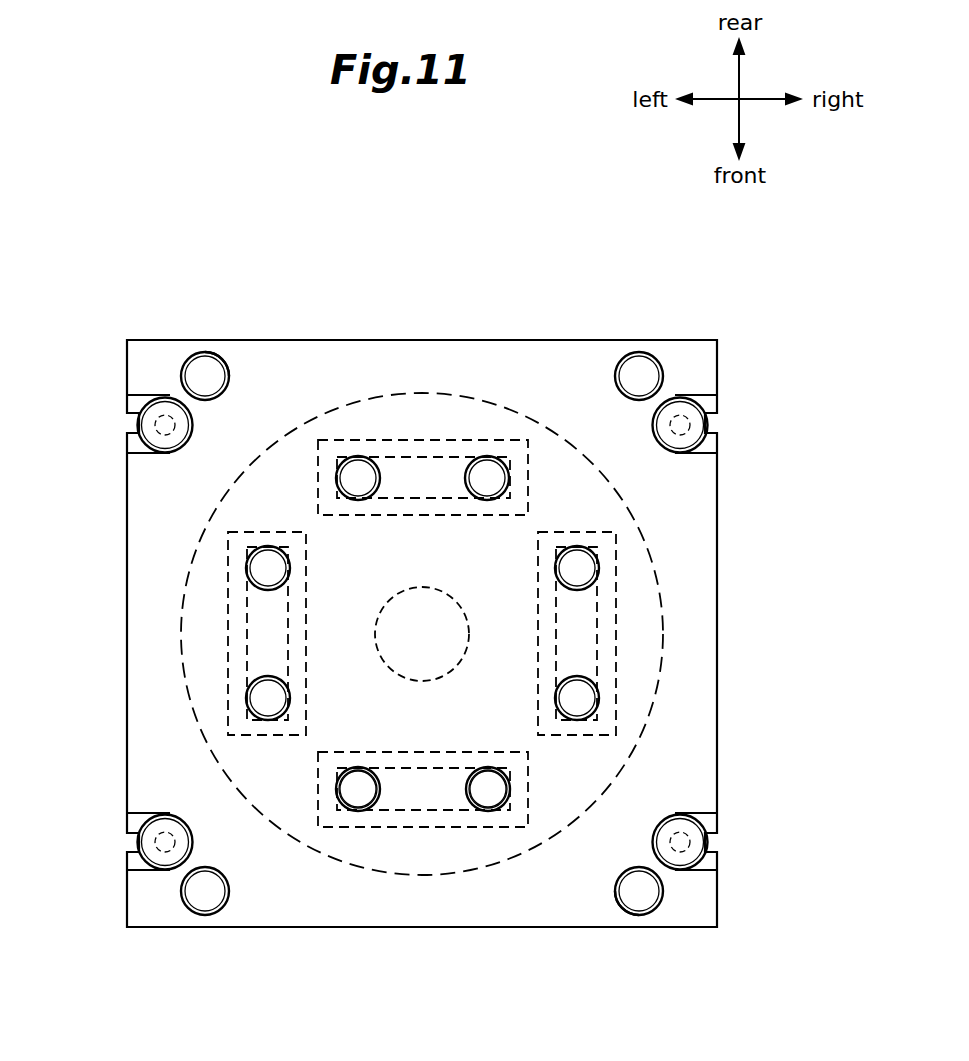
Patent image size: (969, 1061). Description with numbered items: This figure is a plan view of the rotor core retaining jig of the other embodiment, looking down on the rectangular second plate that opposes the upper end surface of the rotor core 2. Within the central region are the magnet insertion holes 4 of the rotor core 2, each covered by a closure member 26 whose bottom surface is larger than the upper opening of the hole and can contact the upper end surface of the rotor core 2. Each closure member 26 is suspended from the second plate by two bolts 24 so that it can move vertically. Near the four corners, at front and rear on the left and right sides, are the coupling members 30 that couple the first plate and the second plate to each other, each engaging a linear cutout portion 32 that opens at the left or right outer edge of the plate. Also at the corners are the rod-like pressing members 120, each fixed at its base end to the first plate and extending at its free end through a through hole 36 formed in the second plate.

The rotor core 2 is at (508, 406).
The magnet insertion hole 4 is at (416, 494).
The bolt 24 is at (358, 792).
The closure member 26 is at (396, 440).
The coupling member 30 is at (163, 440).
The cutout portion 32 is at (140, 423).
The through hole 36 is at (217, 360).
The pressing member 120 is at (203, 368).